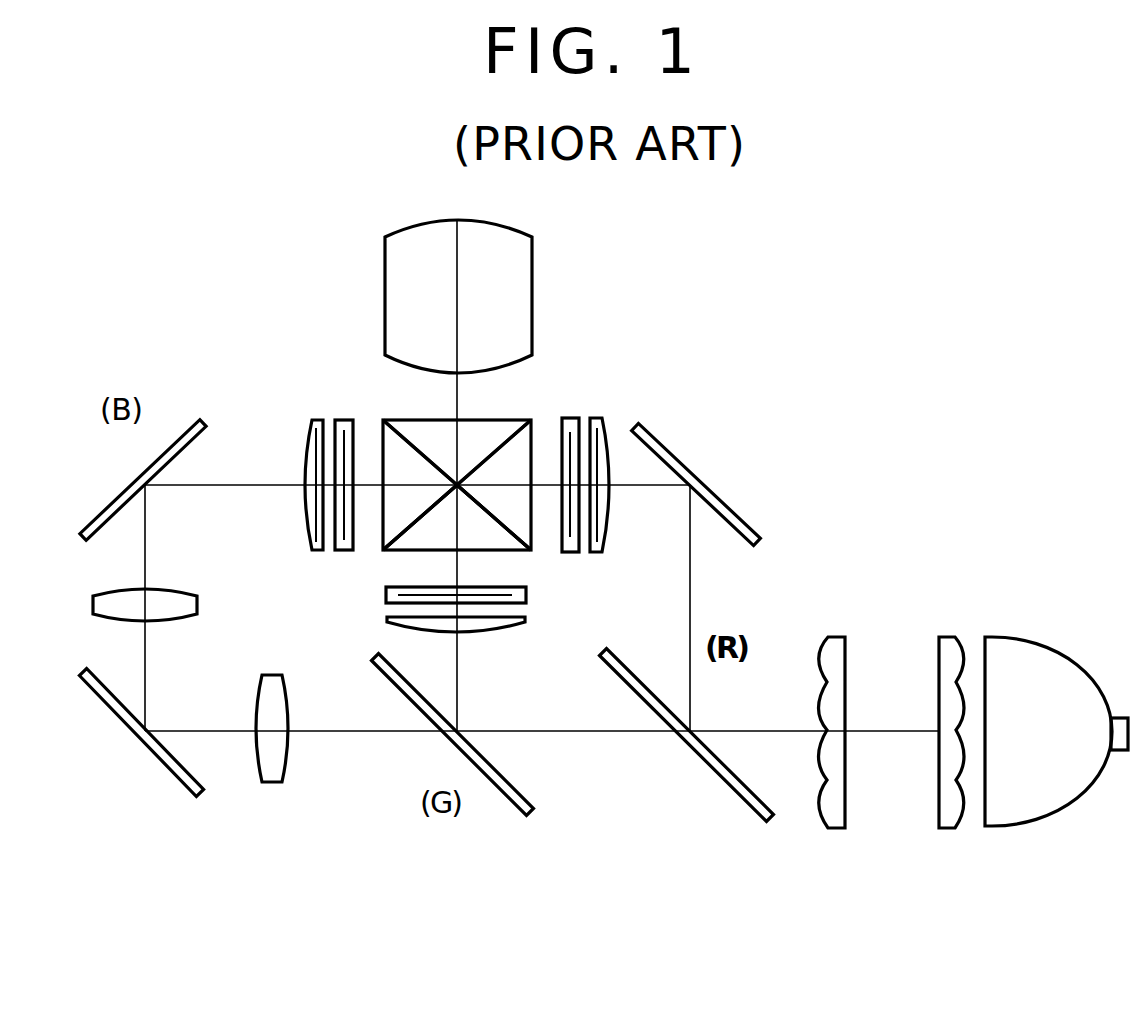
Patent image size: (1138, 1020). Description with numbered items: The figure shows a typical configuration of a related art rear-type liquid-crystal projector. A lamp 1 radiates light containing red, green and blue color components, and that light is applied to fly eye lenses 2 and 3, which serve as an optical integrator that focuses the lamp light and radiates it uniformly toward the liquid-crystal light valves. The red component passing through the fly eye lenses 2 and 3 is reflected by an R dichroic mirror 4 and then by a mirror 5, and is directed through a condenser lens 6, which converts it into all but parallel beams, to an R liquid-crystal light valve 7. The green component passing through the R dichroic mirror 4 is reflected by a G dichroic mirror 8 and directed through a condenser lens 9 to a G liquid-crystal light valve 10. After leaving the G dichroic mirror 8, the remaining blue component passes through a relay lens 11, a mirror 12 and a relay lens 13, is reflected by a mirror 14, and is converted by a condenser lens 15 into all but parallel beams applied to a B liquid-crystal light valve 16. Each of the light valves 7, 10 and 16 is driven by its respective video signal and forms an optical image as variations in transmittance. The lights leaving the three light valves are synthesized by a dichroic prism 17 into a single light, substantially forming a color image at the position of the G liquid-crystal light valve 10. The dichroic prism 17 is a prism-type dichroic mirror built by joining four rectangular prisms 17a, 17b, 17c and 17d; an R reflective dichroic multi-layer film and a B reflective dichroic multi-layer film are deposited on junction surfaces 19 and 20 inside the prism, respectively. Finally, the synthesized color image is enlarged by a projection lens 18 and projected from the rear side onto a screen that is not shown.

The lamp 1 is at (1053, 818).
The fly eye lens 2 is at (834, 828).
The fly eye lens 3 is at (945, 828).
The R dichroic mirror 4 is at (745, 800).
The mirror 5 is at (748, 522).
The condenser lens 6 is at (600, 418).
The R liquid-crystal light valve 7 is at (572, 418).
The G dichroic mirror 8 is at (505, 795).
The condenser lens 9 is at (495, 632).
The G liquid-crystal light valve 10 is at (528, 595).
The relay lens 11 is at (272, 782).
The mirror 12 is at (170, 770).
The relay lens 13 is at (100, 620).
The mirror 14 is at (90, 525).
The condenser lens 15 is at (312, 420).
The B liquid-crystal light valve 16 is at (343, 420).
The dichroic prism 17 is at (475, 418).
The rectangular prism 17a is at (413, 420).
The rectangular prism 17b is at (380, 525).
The rectangular prism 17c is at (520, 550).
The rectangular prism 17d is at (535, 437).
The projection lens 18 is at (535, 244).
The junction surface 19 is at (495, 513).
The junction surface 20 is at (427, 513).